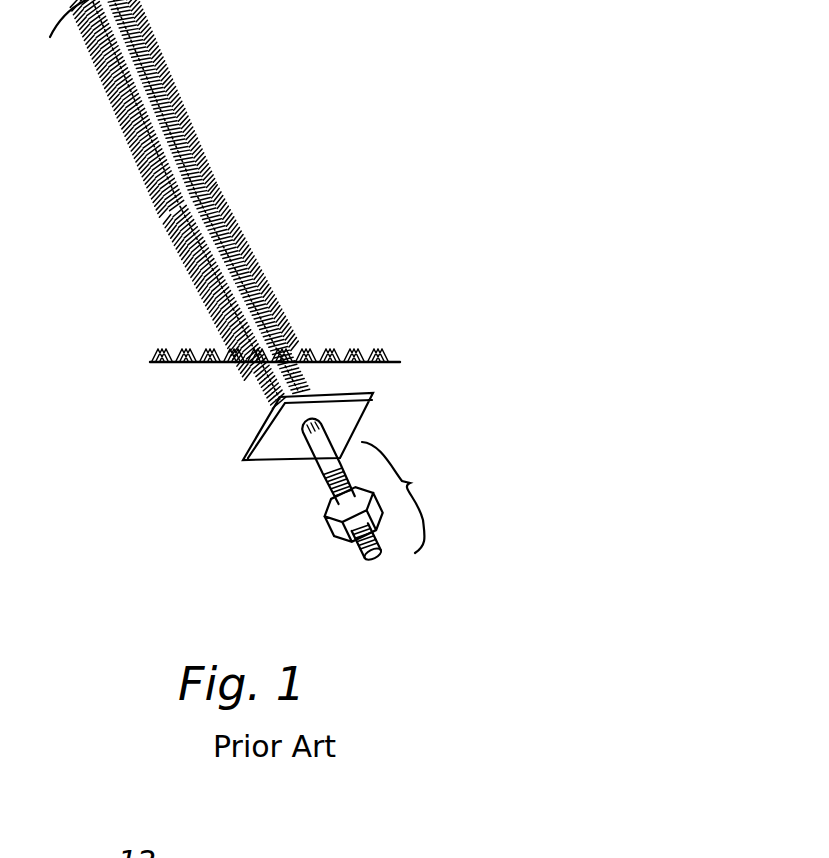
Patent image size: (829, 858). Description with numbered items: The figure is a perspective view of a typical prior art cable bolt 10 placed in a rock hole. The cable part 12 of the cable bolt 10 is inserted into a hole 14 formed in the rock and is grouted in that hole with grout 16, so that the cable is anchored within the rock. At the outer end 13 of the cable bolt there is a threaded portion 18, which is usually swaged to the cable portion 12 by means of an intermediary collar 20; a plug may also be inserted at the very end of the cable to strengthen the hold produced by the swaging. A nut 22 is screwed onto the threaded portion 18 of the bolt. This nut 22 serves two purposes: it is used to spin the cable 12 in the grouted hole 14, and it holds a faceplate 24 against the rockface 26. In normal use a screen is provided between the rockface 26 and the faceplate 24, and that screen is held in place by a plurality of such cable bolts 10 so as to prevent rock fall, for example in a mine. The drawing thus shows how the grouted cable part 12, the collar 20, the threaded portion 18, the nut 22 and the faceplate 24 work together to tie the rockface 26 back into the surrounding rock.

The cable bolt 10 is at (420, 369).
The cable part 12 is at (240, 281).
The outer end 13 is at (408, 497).
The hole 14 is at (255, 378).
The grout 16 is at (228, 199).
The threaded portion 18 is at (330, 500).
The intermediary collar 20 is at (333, 484).
The nut 22 is at (340, 522).
The faceplate 24 is at (273, 437).
The rockface 26 is at (187, 360).